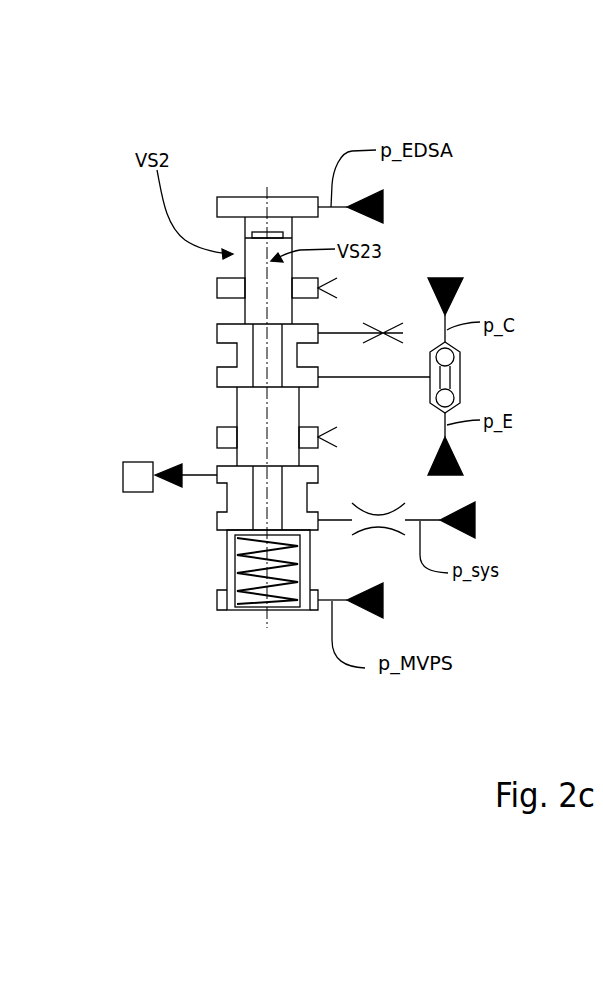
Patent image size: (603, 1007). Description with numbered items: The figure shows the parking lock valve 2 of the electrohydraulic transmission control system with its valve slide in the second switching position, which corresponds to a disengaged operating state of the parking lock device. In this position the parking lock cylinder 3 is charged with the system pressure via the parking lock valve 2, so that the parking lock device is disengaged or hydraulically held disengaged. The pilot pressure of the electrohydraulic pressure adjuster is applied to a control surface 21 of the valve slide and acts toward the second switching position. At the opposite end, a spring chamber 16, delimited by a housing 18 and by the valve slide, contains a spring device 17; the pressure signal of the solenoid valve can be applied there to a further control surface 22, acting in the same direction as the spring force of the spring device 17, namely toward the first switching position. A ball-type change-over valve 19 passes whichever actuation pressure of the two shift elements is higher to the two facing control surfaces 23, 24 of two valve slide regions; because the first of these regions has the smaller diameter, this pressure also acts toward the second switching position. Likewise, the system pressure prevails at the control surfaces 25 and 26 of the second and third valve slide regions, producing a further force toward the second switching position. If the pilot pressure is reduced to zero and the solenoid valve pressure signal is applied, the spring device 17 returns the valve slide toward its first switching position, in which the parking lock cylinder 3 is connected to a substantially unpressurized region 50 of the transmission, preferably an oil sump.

The parking lock valve 2 is at (183, 110).
The parking lock cylinder 3 is at (138, 494).
The spring chamber 16 is at (243, 593).
The spring device 17 is at (258, 606).
The housing 18 is at (303, 197).
The ball-type change-over valve 19 is at (461, 377).
The control surface 21 is at (258, 197).
The further control surface 22 is at (238, 537).
The control surface 23 is at (252, 326).
The control surface 24 is at (242, 384).
The control surface 25 is at (243, 472).
The control surface 26 is at (290, 530).
The substantially unpressurized region 50 is at (320, 288).